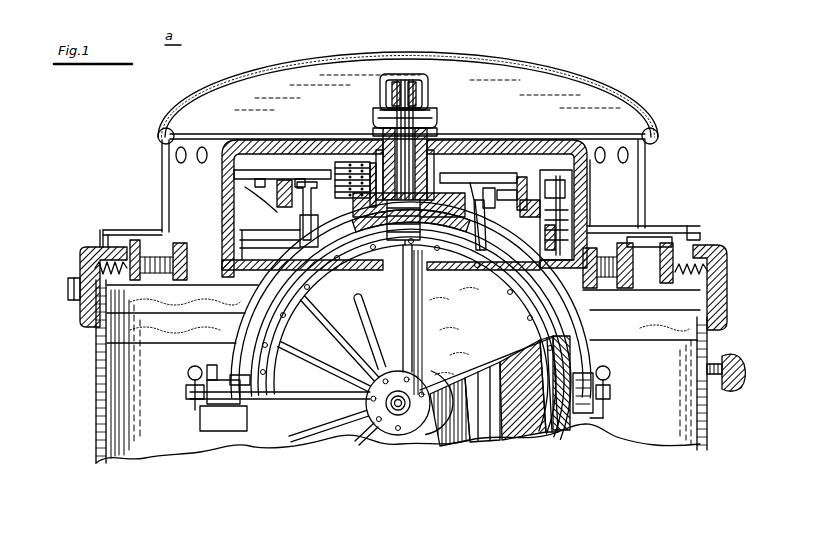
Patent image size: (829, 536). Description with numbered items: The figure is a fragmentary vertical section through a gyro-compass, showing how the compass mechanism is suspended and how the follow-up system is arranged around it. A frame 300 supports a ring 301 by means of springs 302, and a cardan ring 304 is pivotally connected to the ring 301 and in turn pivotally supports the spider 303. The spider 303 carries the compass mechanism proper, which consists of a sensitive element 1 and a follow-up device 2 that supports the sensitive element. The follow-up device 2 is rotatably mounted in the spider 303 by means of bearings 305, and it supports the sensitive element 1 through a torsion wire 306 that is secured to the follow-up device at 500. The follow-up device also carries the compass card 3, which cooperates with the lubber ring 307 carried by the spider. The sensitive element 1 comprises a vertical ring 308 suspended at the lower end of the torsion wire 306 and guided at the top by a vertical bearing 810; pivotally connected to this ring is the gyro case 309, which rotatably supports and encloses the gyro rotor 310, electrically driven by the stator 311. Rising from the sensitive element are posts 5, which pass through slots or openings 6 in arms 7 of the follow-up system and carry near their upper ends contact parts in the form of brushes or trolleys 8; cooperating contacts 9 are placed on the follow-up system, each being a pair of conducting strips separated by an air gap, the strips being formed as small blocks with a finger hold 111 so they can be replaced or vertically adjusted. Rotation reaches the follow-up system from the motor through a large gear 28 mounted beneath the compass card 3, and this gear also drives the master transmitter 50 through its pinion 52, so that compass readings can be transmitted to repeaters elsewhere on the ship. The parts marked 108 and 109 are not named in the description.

The sensitive element 1 is at (287, 262).
The follow-up device 2 is at (292, 213).
The compass card 3 is at (282, 171).
The posts 5 is at (300, 229).
The slots or openings 6 is at (288, 237).
The arms 7 is at (336, 215).
The brushes or trolleys 8 is at (307, 211).
The contacts 9 is at (288, 206).
The large gear 28 is at (548, 180).
The master transmitter 50 is at (546, 233).
The pinion 52 is at (576, 184).
The cross bar 108 is at (483, 190).
The lever 109 is at (482, 200).
The finger hold 111 is at (312, 178).
The frame 300 is at (727, 291).
The ring 301 is at (678, 284).
The springs 302 is at (97, 252).
The spider 303 is at (494, 141).
The cardan ring 304 is at (615, 288).
The bearings 305 is at (380, 116).
The torsion wire 306 is at (430, 105).
The lubber ring 307 is at (224, 176).
The vertical ring 308 is at (566, 432).
The gyro case 309 is at (400, 238).
The gyro rotor 310 is at (518, 445).
The stator 311 is at (460, 430).
The point of securing torsion wire 500 is at (408, 79).
The vertical bearing 810 is at (370, 282).